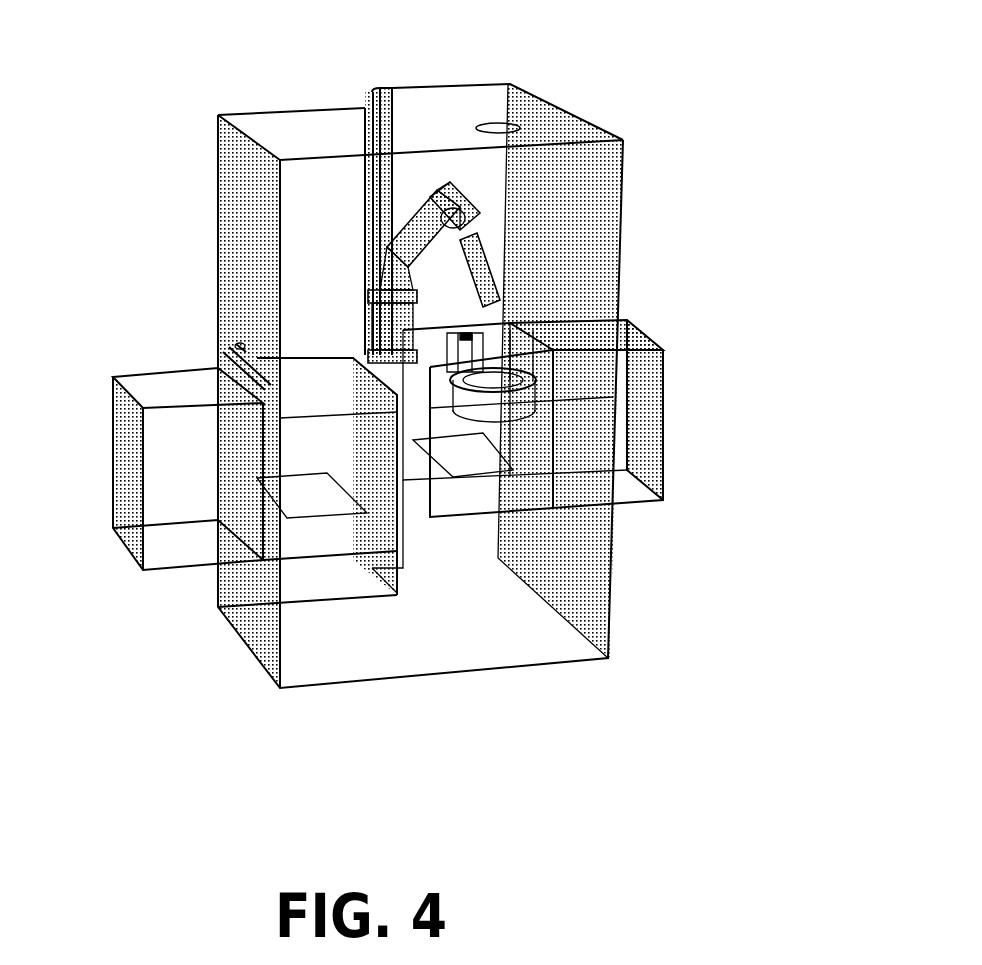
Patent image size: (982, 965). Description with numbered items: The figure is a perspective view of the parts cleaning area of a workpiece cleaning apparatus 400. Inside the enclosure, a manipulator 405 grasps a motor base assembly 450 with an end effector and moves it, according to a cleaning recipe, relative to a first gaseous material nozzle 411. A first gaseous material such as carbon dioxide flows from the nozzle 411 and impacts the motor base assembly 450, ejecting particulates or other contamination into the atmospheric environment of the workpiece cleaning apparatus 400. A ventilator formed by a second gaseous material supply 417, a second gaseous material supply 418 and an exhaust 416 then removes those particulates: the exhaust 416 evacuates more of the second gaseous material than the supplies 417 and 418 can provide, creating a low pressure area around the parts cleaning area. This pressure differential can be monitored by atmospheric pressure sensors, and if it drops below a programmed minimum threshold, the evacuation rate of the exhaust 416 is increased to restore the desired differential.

The workpiece cleaning apparatus 400 is at (413, 35).
The second gaseous material supply 417 is at (512, 124).
The manipulator 405 is at (483, 263).
The first gaseous material nozzle 411 is at (458, 327).
The motor base assembly 450 is at (493, 328).
The exhaust 416 is at (520, 372).
The second gaseous material supply 418 is at (222, 352).